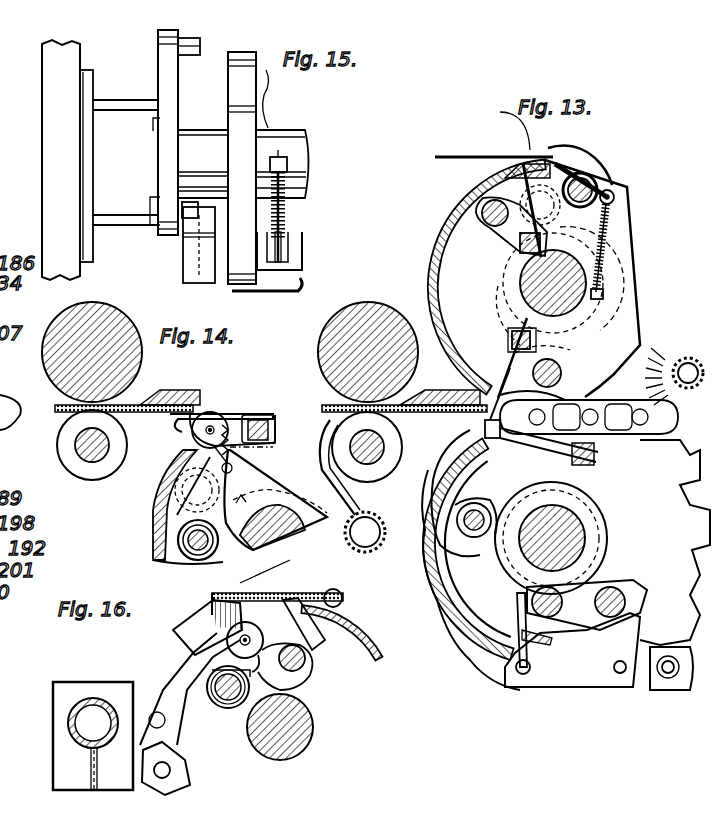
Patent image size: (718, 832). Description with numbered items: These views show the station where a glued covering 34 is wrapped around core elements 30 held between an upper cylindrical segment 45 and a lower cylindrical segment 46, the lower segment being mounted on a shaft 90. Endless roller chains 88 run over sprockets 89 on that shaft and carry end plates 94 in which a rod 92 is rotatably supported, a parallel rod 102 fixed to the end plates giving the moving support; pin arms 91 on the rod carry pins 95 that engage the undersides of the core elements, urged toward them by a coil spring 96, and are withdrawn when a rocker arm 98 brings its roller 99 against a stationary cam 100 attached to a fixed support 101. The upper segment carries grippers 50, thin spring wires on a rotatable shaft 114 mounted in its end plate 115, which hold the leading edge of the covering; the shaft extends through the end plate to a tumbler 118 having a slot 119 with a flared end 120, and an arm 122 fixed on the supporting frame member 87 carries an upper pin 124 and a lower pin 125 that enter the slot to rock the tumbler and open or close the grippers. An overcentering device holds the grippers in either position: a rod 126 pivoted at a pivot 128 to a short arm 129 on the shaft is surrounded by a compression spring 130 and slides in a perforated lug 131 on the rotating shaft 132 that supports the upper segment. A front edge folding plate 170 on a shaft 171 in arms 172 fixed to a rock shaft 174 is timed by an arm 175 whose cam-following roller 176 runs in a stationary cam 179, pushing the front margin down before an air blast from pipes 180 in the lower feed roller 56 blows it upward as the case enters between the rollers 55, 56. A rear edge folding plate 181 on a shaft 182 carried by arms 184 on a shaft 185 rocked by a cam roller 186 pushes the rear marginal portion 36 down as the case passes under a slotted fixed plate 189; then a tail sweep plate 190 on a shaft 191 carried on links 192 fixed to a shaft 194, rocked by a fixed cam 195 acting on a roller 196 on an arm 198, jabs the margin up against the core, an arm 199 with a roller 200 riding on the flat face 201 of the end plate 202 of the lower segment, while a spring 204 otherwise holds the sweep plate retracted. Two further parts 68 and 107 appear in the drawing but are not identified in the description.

In FIG. 14, the core element 30 is at (180, 418).
In FIG. 13, the covering 34 is at (491, 149).
In FIG. 14, the covering 34 is at (150, 400).
In FIG. 14, the rear marginal portion 36 is at (218, 412).
In FIG. 15, the upper cylindrical segment 45 is at (268, 100).
In FIG. 13, the lower cylindrical segment 46 is at (433, 258).
In FIG. 14, the lower cylindrical segment 46 is at (150, 546).
In FIG. 16, the lower cylindrical segment 46 is at (366, 667).
In FIG. 13, the grippers 50 is at (548, 152).
In FIG. 14, the roller 55 is at (118, 326).
In FIG. 14, the lower feed roller 56 is at (68, 440).
In FIG. 14, the pin 68 is at (378, 563).
In FIG. 15, the supporting frame member 87 is at (46, 132).
In FIG. 14, the endless roller chains 88 is at (672, 655).
In FIG. 16, the endless roller chains 88 is at (178, 777).
In FIG. 14, the sprockets 89 is at (675, 542).
In FIG. 14, the shaft 90 is at (285, 528).
In FIG. 16, the shaft 90 is at (284, 724).
In FIG. 14, the pin arms 91 is at (542, 636).
In FIG. 16, the pin arms 91 is at (345, 623).
In FIG. 14, the rod 92 is at (612, 588).
In FIG. 16, the rod 92 is at (220, 705).
In FIG. 14, the end plates 94 is at (592, 690).
In FIG. 16, the end plates 94 is at (268, 583).
In FIG. 14, the pins 95 is at (572, 650).
In FIG. 16, the pins 95 is at (300, 590).
In FIG. 16, the coil spring 96 is at (230, 712).
In FIG. 16, the rocker arm 98 is at (228, 648).
In FIG. 16, the roller 99 is at (268, 593).
In FIG. 16, the stationary cam 100 is at (185, 622).
In FIG. 16, the fixed support 101 is at (68, 723).
In FIG. 14, the rod 102 is at (522, 645).
In FIG. 16, the rod 102 is at (300, 670).
In FIG. 13, the gear 107 is at (690, 357).
In FIG. 15, the rotatable shaft 114 is at (302, 246).
In FIG. 13, the rotatable shaft 114 is at (588, 172).
In FIG. 15, the end plate 115 is at (250, 290).
In FIG. 13, the end plate 115 is at (627, 307).
In FIG. 15, the tumbler 118 is at (183, 278).
In FIG. 13, the tumbler 118 is at (622, 190).
In FIG. 15, the slot 119 is at (190, 228).
In FIG. 13, the flared end 120 is at (617, 205).
In FIG. 15, the arm 122 is at (160, 80).
In FIG. 15, the upper pin 124 is at (190, 46).
In FIG. 15, the lower pin 125 is at (187, 200).
In FIG. 15, the rod 126 is at (284, 216).
In FIG. 13, the rod 126 is at (610, 240).
In FIG. 13, the pivot 128 is at (614, 194).
In FIG. 13, the short arm 129 is at (606, 186).
In FIG. 15, the compression spring 130 is at (290, 200).
In FIG. 13, the compression spring 130 is at (610, 252).
In FIG. 15, the perforated lug 131 is at (287, 164).
In FIG. 13, the perforated lug 131 is at (608, 275).
In FIG. 15, the rotating shaft 132 is at (300, 142).
In FIG. 13, the rotating shaft 132 is at (587, 316).
In FIG. 13, the front edge folding plate 170 is at (498, 124).
In FIG. 13, the shaft 171 is at (518, 246).
In FIG. 13, the arms 172 is at (466, 236).
In FIG. 13, the rock shaft 174 is at (482, 213).
In FIG. 13, the arm 175 is at (490, 186).
In FIG. 13, the cam-following roller 176 is at (523, 160).
In FIG. 13, the stationary cam 179 is at (497, 288).
In FIG. 14, the pipes 180 is at (383, 450).
In FIG. 13, the rear edge folding plate 181 is at (512, 338).
In FIG. 13, the shaft 182 is at (505, 322).
In FIG. 13, the arms 184 is at (553, 264).
In FIG. 13, the shaft 185 is at (556, 365).
In FIG. 13, the cam roller 186 is at (472, 370).
In FIG. 13, the fixed plate 189 is at (441, 389).
In FIG. 14, the fixed plate 189 is at (186, 392).
In FIG. 14, the tail sweep plate 190 is at (195, 436).
In FIG. 14, the shaft 191 is at (272, 433).
In FIG. 14, the links 192 is at (274, 448).
In FIG. 14, the shaft 194 is at (178, 540).
In FIG. 14, the fixed cam 195 is at (258, 545).
In FIG. 14, the roller 196 is at (160, 488).
In FIG. 14, the arm 198 is at (150, 512).
In FIG. 14, the arm 199 is at (262, 425).
In FIG. 14, the roller 200 is at (236, 412).
In FIG. 14, the flat face 201 is at (285, 477).
In FIG. 14, the end plate 202 is at (303, 494).
In FIG. 14, the spring 204 is at (222, 463).